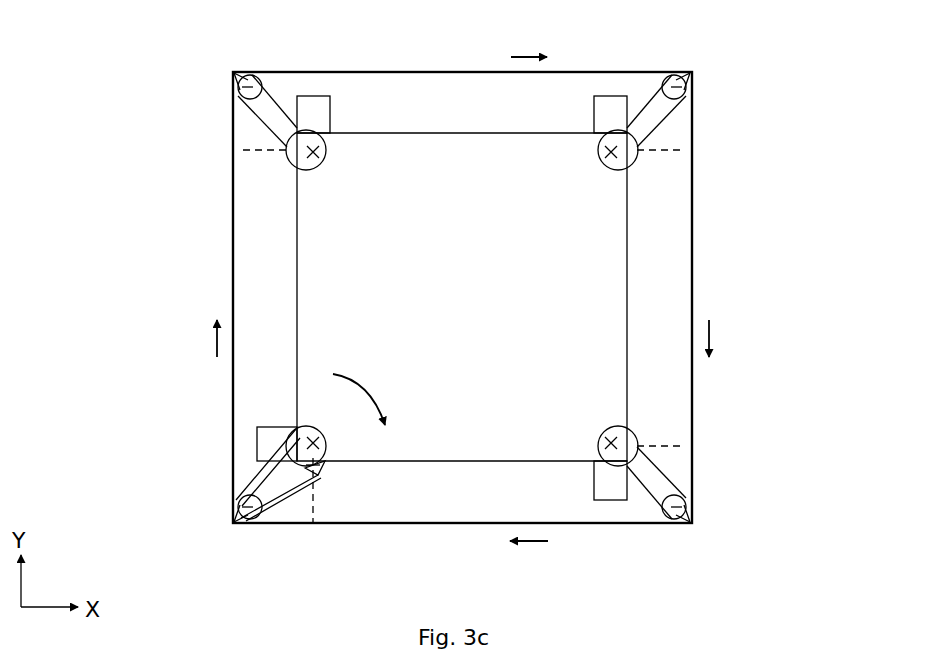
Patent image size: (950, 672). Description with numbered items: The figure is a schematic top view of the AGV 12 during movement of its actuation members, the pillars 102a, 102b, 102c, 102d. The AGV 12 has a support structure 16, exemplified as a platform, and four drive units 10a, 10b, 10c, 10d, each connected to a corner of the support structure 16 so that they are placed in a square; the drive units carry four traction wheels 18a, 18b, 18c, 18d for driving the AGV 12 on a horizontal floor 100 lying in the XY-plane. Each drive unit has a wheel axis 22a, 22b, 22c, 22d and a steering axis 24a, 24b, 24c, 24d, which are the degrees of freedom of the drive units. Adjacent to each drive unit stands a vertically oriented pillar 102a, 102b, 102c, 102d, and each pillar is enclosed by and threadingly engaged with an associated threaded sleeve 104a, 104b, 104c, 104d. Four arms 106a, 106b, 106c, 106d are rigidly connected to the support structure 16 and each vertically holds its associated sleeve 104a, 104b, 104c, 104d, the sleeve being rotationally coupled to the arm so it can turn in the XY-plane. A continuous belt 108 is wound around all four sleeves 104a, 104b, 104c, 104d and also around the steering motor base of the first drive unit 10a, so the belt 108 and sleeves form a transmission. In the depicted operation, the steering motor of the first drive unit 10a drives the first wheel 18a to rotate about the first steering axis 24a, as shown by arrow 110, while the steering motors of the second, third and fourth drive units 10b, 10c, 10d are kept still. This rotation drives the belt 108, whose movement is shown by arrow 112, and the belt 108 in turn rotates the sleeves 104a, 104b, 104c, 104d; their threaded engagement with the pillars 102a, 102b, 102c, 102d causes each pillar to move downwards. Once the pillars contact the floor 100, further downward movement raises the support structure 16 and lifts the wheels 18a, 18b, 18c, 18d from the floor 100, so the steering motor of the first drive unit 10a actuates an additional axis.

The AGV 12 is at (124, 50).
The first drive unit 10a is at (307, 538).
The second drive unit 10b is at (311, 60).
The third drive unit 10c is at (617, 60).
The fourth drive unit 10d is at (617, 538).
The support structure 16 is at (476, 293).
The first wheel 18a is at (262, 445).
The second wheel 18b is at (313, 112).
The third wheel 18c is at (611, 112).
The fourth wheel 18d is at (611, 486).
The wheel axis 22a is at (318, 485).
The wheel axis 22b is at (265, 152).
The wheel axis 22c is at (663, 152).
The wheel axis 22d is at (663, 444).
The first steering axis 24a is at (298, 428).
The steering axis 24b is at (298, 168).
The steering axis 24c is at (626, 168).
The steering axis 24d is at (626, 428).
The floor 100 is at (868, 293).
The pillar 102a is at (238, 518).
The pillar 102b is at (240, 80).
The pillar 102c is at (684, 80).
The pillar 102d is at (686, 518).
The threaded sleeve 104a is at (242, 497).
The threaded sleeve 104b is at (243, 98).
The threaded sleeve 104c is at (681, 98).
The threaded sleeve 104d is at (681, 500).
The arm 106a is at (280, 480).
The arm 106b is at (283, 116).
The arm 106c is at (641, 116).
The arm 106d is at (641, 478).
The continuous belt 108 is at (233, 302).
The arrow 110 is at (369, 398).
The arrow 112 is at (462, 305).